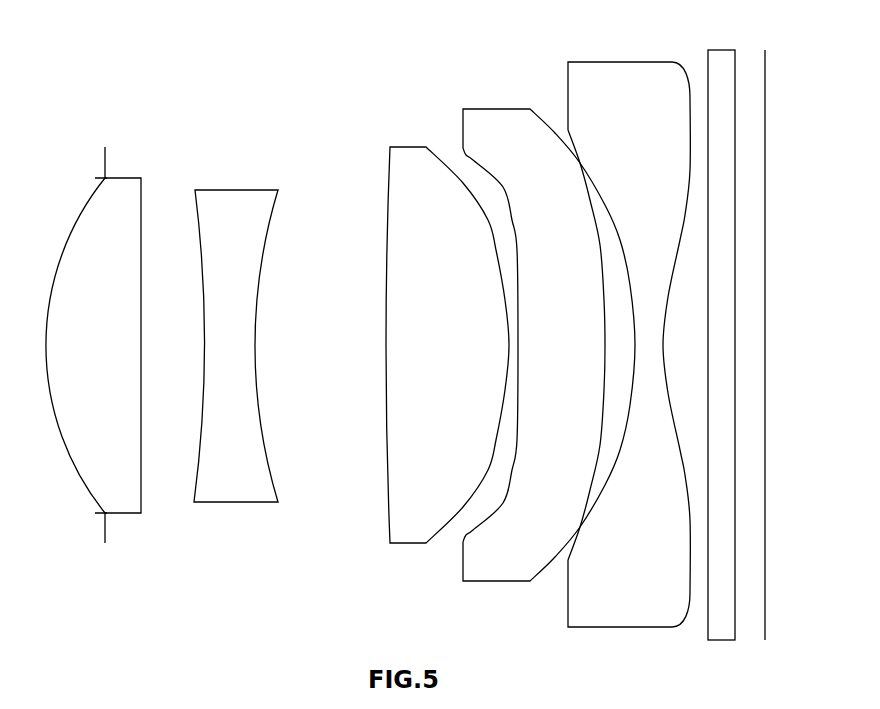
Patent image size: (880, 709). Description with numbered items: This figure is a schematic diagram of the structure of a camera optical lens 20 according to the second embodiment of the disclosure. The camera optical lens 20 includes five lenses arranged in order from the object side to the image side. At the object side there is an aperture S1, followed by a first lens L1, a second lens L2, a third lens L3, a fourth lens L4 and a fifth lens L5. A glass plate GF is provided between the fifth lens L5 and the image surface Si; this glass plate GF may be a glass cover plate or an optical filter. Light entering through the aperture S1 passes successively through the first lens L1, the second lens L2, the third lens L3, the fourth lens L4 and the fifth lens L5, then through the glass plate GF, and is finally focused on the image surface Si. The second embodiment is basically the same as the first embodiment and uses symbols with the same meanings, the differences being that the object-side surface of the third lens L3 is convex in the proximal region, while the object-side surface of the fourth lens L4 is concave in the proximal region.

The camera optical lens 20 is at (409, 321).
The aperture S1 is at (108, 334).
The first lens L1 is at (93, 333).
The second lens L2 is at (236, 334).
The third lens L3 is at (447, 334).
The fourth lens L4 is at (549, 334).
The fifth lens L5 is at (629, 333).
The glass plate GF is at (721, 333).
The image surface Si is at (764, 334).